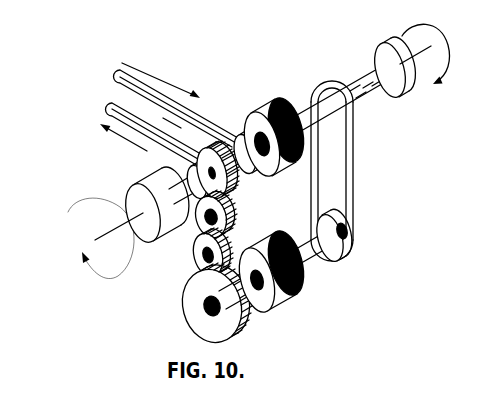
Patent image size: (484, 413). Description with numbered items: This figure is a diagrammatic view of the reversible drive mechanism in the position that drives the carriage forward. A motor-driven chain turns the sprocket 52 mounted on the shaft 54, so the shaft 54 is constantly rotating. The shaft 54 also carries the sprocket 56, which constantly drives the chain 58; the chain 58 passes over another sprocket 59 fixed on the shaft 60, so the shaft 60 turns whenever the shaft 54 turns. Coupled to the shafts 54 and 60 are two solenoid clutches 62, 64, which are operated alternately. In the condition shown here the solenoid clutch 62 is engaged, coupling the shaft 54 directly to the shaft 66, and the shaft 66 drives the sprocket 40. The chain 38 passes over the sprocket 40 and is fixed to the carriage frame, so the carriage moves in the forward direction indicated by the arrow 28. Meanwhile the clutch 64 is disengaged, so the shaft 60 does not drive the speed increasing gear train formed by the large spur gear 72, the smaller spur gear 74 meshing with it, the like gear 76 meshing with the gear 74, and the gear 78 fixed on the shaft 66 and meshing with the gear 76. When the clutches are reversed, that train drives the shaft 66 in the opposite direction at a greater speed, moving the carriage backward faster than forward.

The arrow 28 is at (157, 76).
The chain 38 is at (110, 109).
The sprocket 40 is at (178, 163).
The sprocket 52 is at (382, 49).
The shaft 54 is at (371, 93).
The sprocket 56 is at (330, 82).
The chain 58 is at (353, 168).
The sprocket 59 is at (337, 261).
The shaft 60 is at (362, 207).
The solenoid clutch 62 is at (255, 104).
The solenoid clutch 64 is at (283, 291).
The shaft 66 is at (247, 131).
The large spur gear 72 is at (200, 317).
The smaller spur gear 74 is at (205, 259).
The gear 76 is at (234, 233).
The gear 78 is at (228, 196).